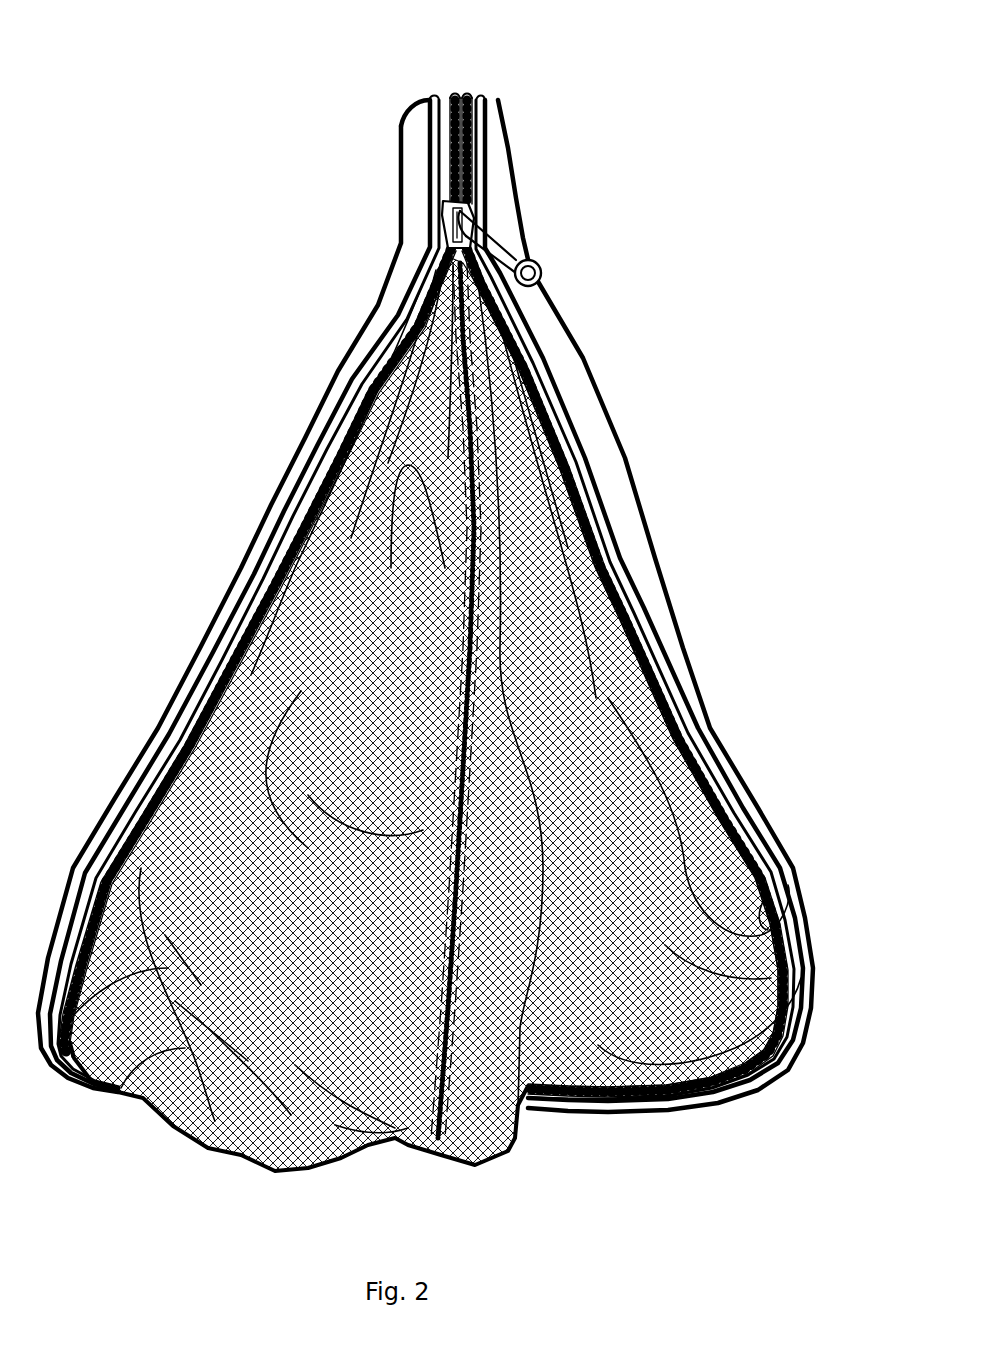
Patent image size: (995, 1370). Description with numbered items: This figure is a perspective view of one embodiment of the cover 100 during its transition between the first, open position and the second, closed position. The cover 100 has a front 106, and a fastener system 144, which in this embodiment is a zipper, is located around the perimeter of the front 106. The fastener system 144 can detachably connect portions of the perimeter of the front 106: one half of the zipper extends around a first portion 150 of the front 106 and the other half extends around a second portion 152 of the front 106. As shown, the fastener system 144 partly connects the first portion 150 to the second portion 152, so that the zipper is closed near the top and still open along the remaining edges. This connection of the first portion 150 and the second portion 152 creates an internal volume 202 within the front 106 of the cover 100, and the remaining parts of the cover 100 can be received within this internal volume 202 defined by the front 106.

The cover 100 is at (458, 592).
The fastener system 144 is at (440, 86).
The front 106 is at (498, 172).
The second portion 152 is at (223, 580).
The first portion 150 is at (655, 600).
The internal volume 202 is at (632, 697).